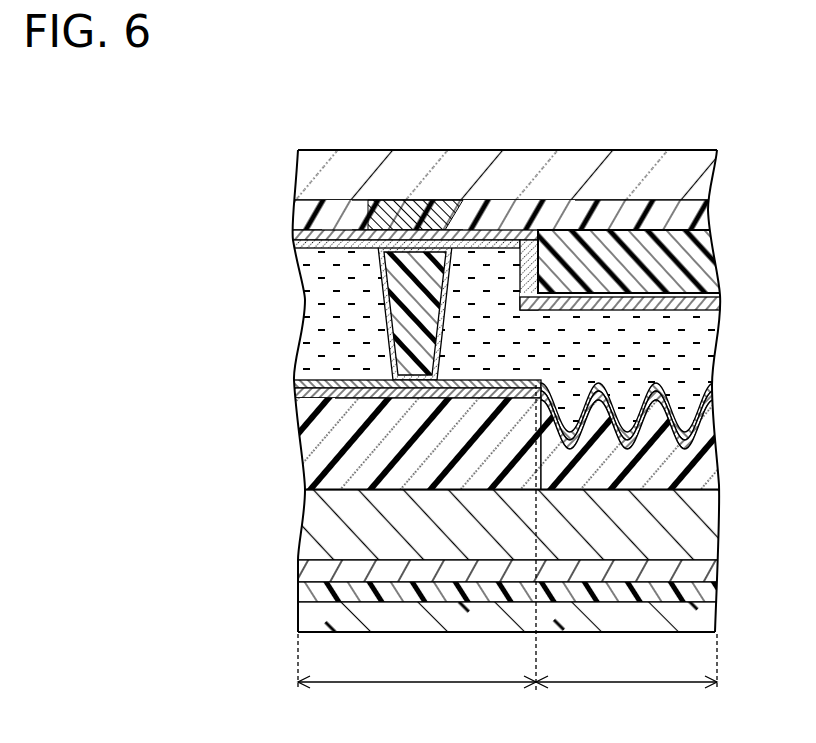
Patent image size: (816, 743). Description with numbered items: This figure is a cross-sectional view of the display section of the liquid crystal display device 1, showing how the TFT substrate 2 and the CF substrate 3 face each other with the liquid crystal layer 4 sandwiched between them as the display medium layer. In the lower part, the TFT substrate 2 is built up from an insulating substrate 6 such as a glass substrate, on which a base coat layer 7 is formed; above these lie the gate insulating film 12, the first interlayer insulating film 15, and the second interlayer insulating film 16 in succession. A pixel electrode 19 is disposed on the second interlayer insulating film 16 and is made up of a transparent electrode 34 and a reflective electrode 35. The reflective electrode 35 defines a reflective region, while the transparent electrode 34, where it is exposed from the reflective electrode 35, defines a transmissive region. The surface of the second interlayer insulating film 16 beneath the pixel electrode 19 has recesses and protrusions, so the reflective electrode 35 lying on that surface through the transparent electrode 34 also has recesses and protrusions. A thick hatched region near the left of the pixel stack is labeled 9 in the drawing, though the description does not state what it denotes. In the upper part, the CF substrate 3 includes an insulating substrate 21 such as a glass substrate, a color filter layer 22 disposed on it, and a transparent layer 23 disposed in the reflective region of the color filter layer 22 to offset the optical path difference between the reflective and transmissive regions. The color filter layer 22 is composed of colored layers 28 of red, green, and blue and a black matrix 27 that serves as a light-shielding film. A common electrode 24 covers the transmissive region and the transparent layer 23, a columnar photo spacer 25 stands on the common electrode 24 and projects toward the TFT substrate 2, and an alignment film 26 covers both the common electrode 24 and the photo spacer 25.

The liquid crystal display device 1 is at (312, 92).
The TFT substrate 2 is at (459, 495).
The CF substrate 3 is at (490, 202).
The liquid crystal layer 4 is at (490, 339).
The insulating substrate 6 is at (300, 618).
The base coat layer 7 is at (300, 590).
The thin film transistor 9 is at (303, 410).
The gate insulating film 12 is at (300, 573).
The first interlayer insulating film 15 is at (305, 518).
The second interlayer insulating film 16 is at (473, 444).
The pixel electrode 19 is at (442, 387).
The insulating substrate 21 is at (297, 172).
The color filter layer 22 is at (293, 210).
The transparent layer 23 is at (668, 245).
The common electrode 24 is at (295, 236).
The photo spacer 25 is at (400, 293).
The alignment film 26 is at (295, 245).
The black matrix 27 is at (418, 210).
The colored layers 28 is at (340, 213).
The transparent electrode 34 is at (473, 409).
The reflective electrode 35 is at (540, 383).